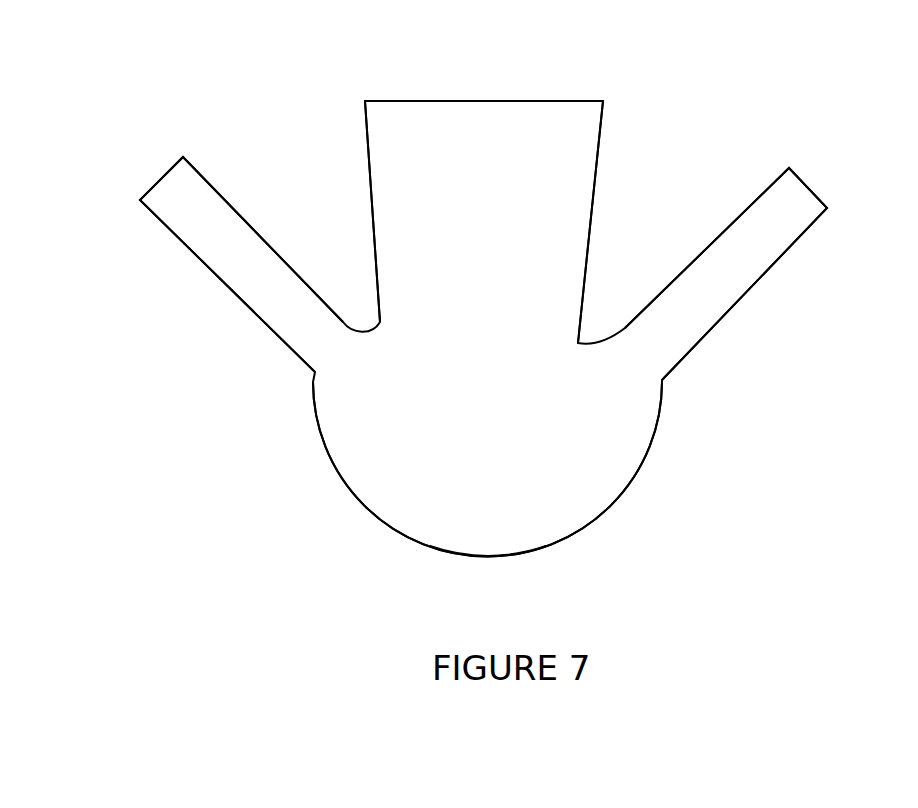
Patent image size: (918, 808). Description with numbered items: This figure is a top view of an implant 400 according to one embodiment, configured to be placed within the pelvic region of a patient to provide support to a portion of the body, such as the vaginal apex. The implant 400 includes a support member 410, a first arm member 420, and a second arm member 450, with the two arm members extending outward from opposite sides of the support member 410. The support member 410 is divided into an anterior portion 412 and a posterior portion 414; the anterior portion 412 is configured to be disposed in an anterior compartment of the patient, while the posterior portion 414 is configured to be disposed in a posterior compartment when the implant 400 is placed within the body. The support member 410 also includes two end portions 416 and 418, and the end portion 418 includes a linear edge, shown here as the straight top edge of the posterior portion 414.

The implant 400 is at (157, 65).
The support member 410 is at (610, 442).
The anterior portion 412 is at (585, 492).
The posterior portion 414 is at (563, 168).
The end portion 416 is at (455, 557).
The end portion 418 is at (482, 112).
The first arm member 420 is at (202, 243).
The second arm member 450 is at (757, 250).